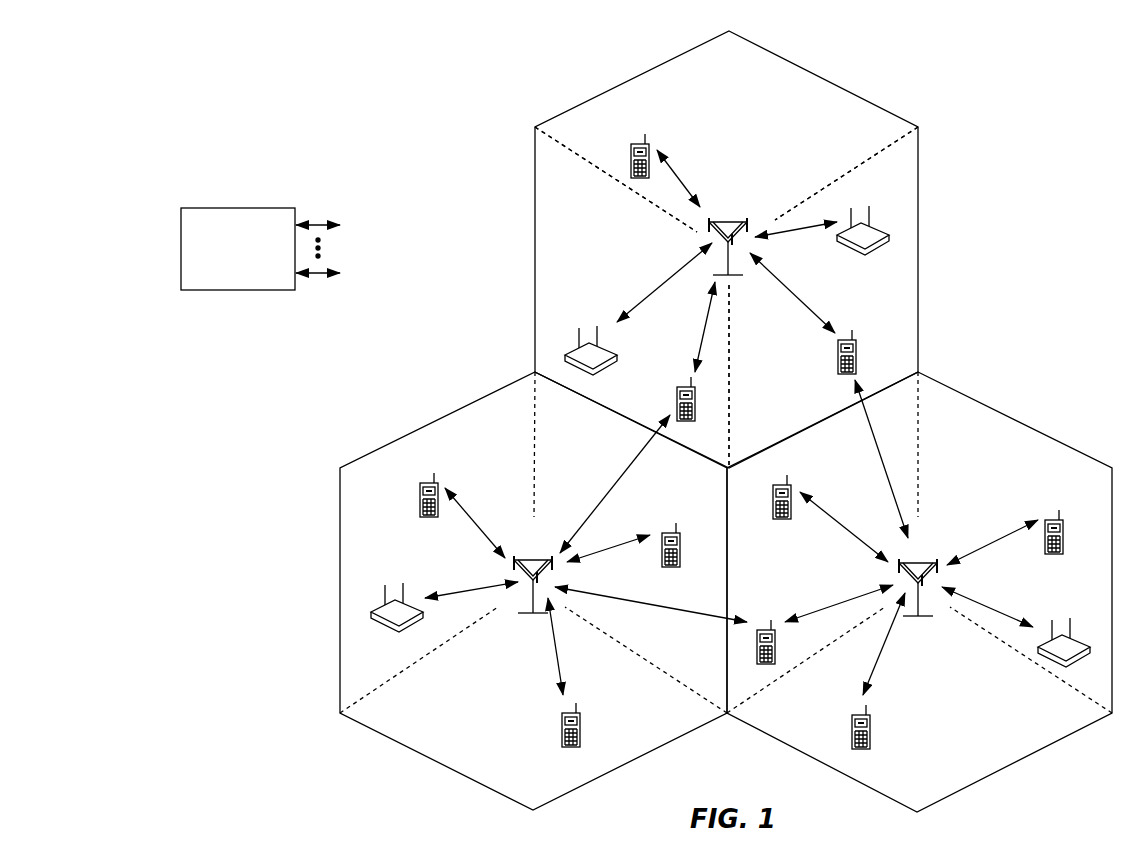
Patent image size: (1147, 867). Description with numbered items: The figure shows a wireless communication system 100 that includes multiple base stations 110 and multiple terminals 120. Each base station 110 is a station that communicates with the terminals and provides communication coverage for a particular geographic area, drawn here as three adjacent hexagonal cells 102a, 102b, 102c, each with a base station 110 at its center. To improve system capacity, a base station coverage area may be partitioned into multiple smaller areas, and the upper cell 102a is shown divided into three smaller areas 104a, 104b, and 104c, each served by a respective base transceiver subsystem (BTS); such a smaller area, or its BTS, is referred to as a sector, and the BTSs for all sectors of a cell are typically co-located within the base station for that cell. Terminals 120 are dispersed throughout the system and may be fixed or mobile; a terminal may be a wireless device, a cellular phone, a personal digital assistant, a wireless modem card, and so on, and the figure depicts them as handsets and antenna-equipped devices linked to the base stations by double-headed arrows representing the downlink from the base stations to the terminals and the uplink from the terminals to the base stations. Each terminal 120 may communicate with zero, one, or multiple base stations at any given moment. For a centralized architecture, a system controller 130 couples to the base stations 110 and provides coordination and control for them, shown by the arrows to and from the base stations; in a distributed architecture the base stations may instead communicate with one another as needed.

The wireless communication system 100 is at (1054, 90).
The geographic area 102a is at (821, 78).
The geographic area 102b is at (437, 420).
The geographic area 102c is at (1032, 427).
The smaller area 104a is at (750, 85).
The smaller area 104b is at (588, 226).
The smaller area 104c is at (812, 410).
The base station 110 is at (728, 219).
The terminal 120 is at (631, 152).
The system controller 130 is at (236, 208).